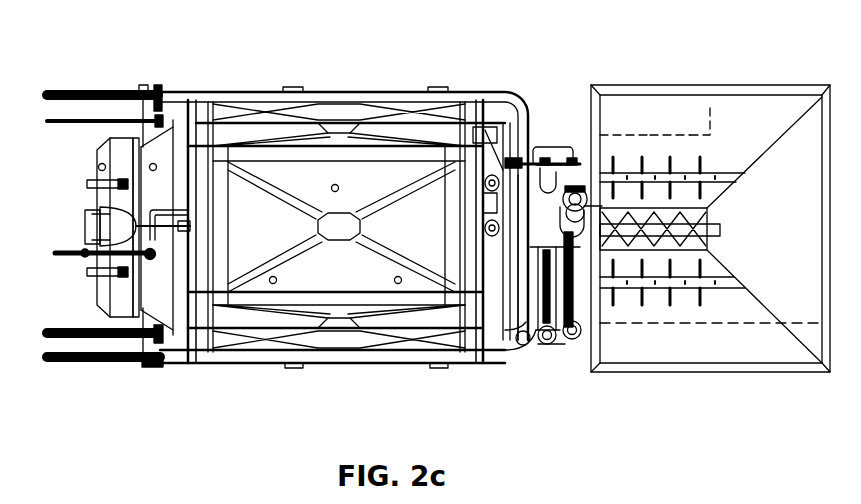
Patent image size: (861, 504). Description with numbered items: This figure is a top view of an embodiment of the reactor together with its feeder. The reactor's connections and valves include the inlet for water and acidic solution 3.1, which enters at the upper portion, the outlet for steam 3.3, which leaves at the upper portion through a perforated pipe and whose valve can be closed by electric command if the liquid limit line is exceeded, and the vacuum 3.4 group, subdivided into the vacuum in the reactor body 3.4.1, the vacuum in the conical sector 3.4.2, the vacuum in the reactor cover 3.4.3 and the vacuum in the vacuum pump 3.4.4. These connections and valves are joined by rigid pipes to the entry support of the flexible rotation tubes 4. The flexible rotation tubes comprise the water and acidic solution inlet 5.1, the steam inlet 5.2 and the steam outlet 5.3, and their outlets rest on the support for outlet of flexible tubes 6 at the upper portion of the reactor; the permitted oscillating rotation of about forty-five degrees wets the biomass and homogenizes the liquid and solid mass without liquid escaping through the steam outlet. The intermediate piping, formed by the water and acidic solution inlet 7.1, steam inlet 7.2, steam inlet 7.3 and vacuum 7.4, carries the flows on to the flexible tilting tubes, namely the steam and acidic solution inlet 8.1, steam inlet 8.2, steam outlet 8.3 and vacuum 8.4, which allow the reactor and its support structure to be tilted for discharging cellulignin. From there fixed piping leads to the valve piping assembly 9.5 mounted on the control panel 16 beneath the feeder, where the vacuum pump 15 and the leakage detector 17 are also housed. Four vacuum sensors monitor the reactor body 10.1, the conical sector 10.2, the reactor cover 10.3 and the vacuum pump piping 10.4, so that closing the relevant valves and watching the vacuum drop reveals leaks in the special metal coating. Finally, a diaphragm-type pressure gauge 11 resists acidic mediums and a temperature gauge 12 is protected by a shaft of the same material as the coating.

The steam inlet 8.2 is at (102, 92).
The vacuum 8.4 is at (135, 90).
The steam inlet 7.2 is at (318, 98).
The vacuum 7.4 is at (335, 122).
The water and acidic solution inlet 7.1 is at (327, 335).
The steam inlet 7.3 is at (297, 355).
The steam and acidic solution inlet 8.1 is at (143, 367).
The steam outlet 8.3 is at (108, 363).
The reactor cover vacuum sensor 10.3 is at (99, 167).
The conic sector vacuum sensor 10.2 is at (153, 171).
The reactor body vacuum sensor 10.1 is at (339, 189).
The vacuum pump piping sensor 10.4 is at (692, 119).
The vacuum in the reactor cover 3.4.3 is at (82, 250).
The vacuum in the conical sector 3.4.2 is at (152, 259).
The vacuum in the reactor body 3.4.1 is at (343, 242).
The vacuum in the vacuum pump 3.4.4 is at (657, 119).
The vacuum 3.4 is at (503, 170).
The inlet for water and acidic solution 3.1 is at (485, 183).
The outlet for steam 3.3 is at (562, 203).
The pressure gauge 11 is at (277, 281).
The temperature gauge 12 is at (394, 281).
The water and acidic solution inlet 5.1 is at (552, 168).
The steam inlet 5.2 is at (540, 158).
The steam outlet 5.3 is at (575, 177).
The entry support of the flexible rotation tubes 4 is at (578, 180).
The support for outlet of flexible tubes 6 is at (572, 323).
The valve piping assembly 9.5 is at (711, 336).
The control panel 16 is at (710, 228).
The vacuum pump 15 is at (625, 119).
The leakage detector 17 is at (611, 126).